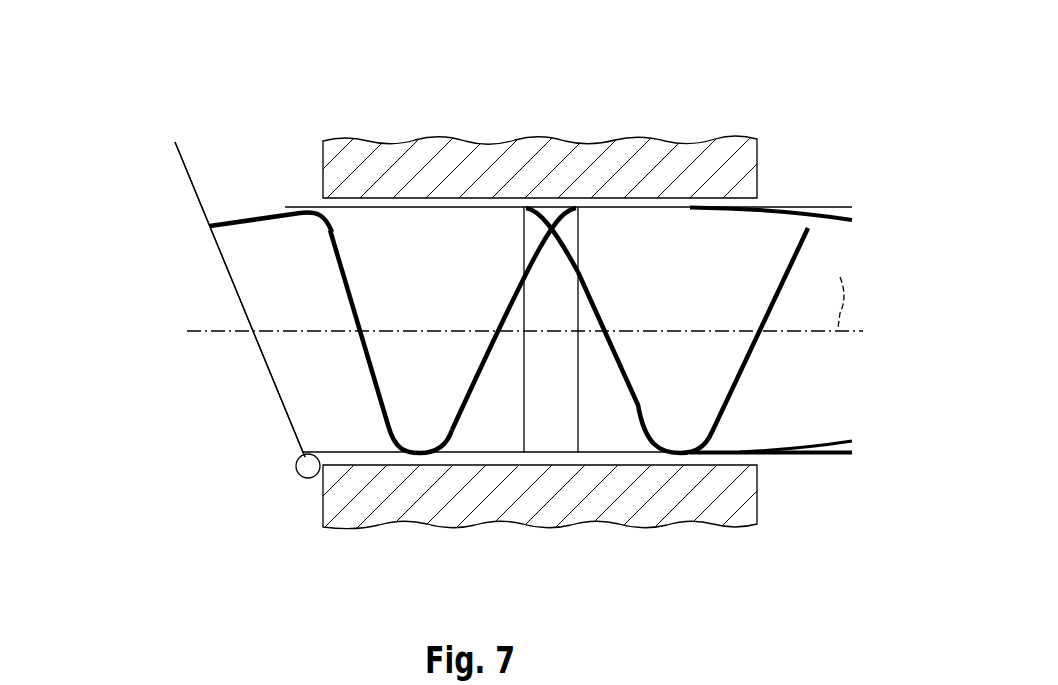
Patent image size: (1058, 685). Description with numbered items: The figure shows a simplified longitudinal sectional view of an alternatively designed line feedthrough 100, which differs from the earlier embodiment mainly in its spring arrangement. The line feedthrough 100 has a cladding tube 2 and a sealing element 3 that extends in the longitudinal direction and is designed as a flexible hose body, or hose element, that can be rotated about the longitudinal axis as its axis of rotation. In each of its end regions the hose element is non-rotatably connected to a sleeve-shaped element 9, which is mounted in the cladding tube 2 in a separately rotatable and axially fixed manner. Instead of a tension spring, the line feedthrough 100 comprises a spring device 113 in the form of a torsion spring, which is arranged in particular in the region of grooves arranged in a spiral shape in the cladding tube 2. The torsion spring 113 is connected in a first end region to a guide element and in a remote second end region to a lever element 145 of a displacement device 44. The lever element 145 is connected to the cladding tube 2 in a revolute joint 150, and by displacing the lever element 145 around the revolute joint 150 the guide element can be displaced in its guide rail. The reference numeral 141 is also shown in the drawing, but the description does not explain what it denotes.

The line feedthrough 100 is at (152, 63).
The cladding tube 2 is at (486, 148).
The element 9 is at (400, 198).
The crossing section of spring wire 141 is at (587, 218).
The sealing element 3 is at (872, 225).
The spring device 113 is at (257, 212).
The lever element 145 is at (222, 266).
The displacement device 44 is at (255, 372).
The revolute joint 150 is at (297, 477).